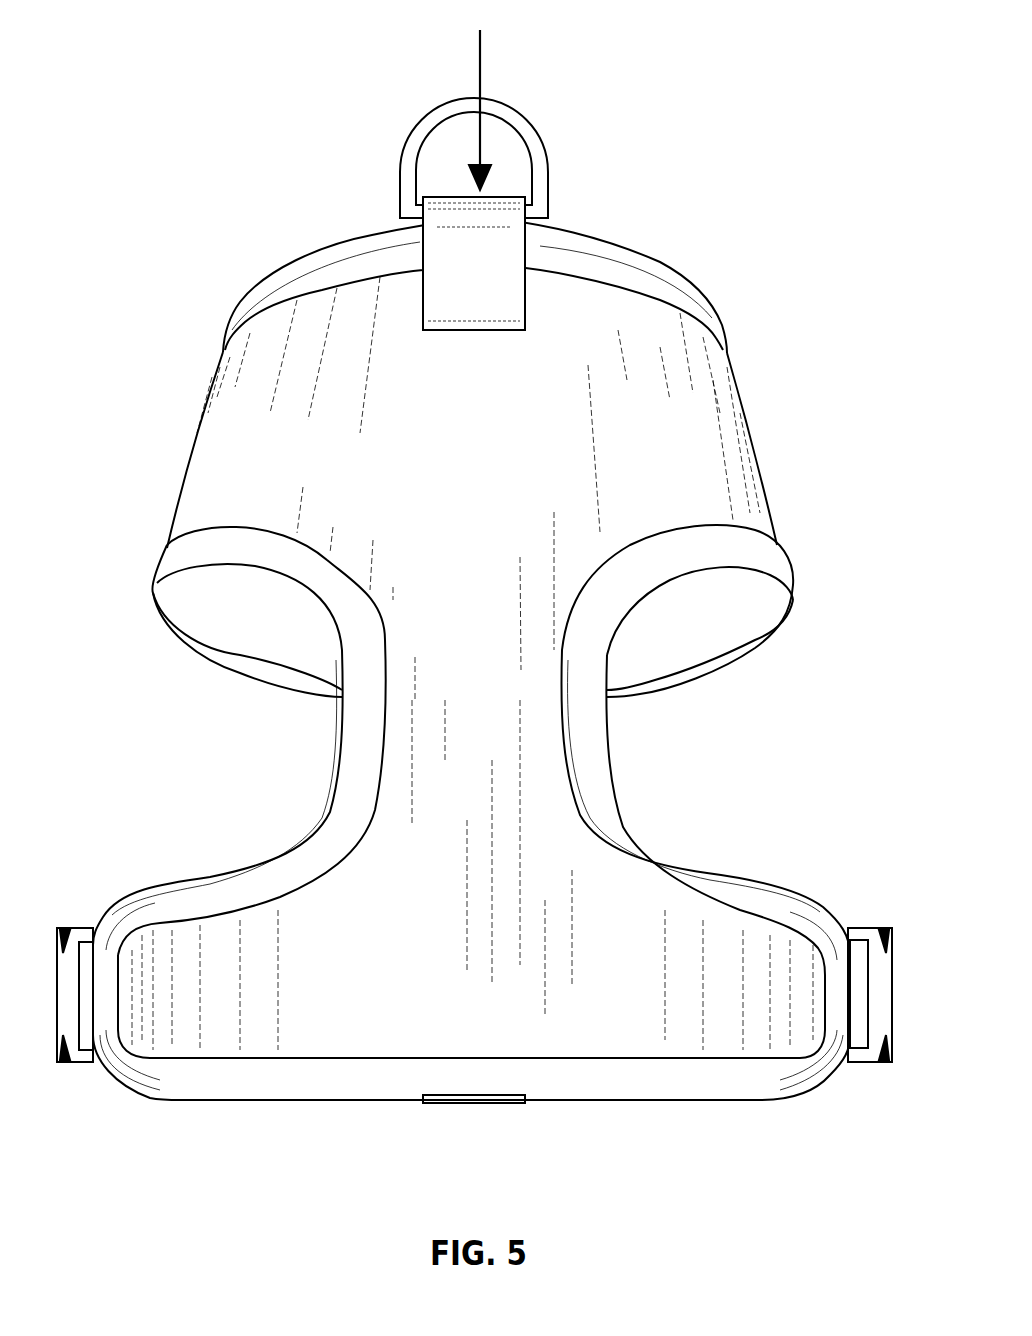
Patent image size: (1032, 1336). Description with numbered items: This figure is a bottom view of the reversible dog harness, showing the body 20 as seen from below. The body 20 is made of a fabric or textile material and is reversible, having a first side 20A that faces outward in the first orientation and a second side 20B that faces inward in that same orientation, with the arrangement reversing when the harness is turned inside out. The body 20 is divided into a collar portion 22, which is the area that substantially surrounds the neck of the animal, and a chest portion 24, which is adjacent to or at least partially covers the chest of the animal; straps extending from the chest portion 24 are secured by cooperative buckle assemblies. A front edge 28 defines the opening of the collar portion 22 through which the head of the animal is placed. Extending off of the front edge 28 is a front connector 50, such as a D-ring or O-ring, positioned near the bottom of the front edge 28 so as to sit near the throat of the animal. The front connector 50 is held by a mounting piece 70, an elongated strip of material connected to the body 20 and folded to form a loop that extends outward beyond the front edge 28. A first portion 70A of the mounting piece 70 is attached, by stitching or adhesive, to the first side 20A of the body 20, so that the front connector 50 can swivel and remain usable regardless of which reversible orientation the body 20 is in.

The body 20 is at (474, 552).
The first side 20A is at (458, 445).
The second side 20B is at (678, 608).
The collar portion 22 is at (718, 428).
The chest portion 24 is at (530, 773).
The front edge 28 is at (403, 227).
The front connector 50 is at (530, 133).
The mounting piece 70 is at (481, 95).
The first portion 70A is at (505, 265).